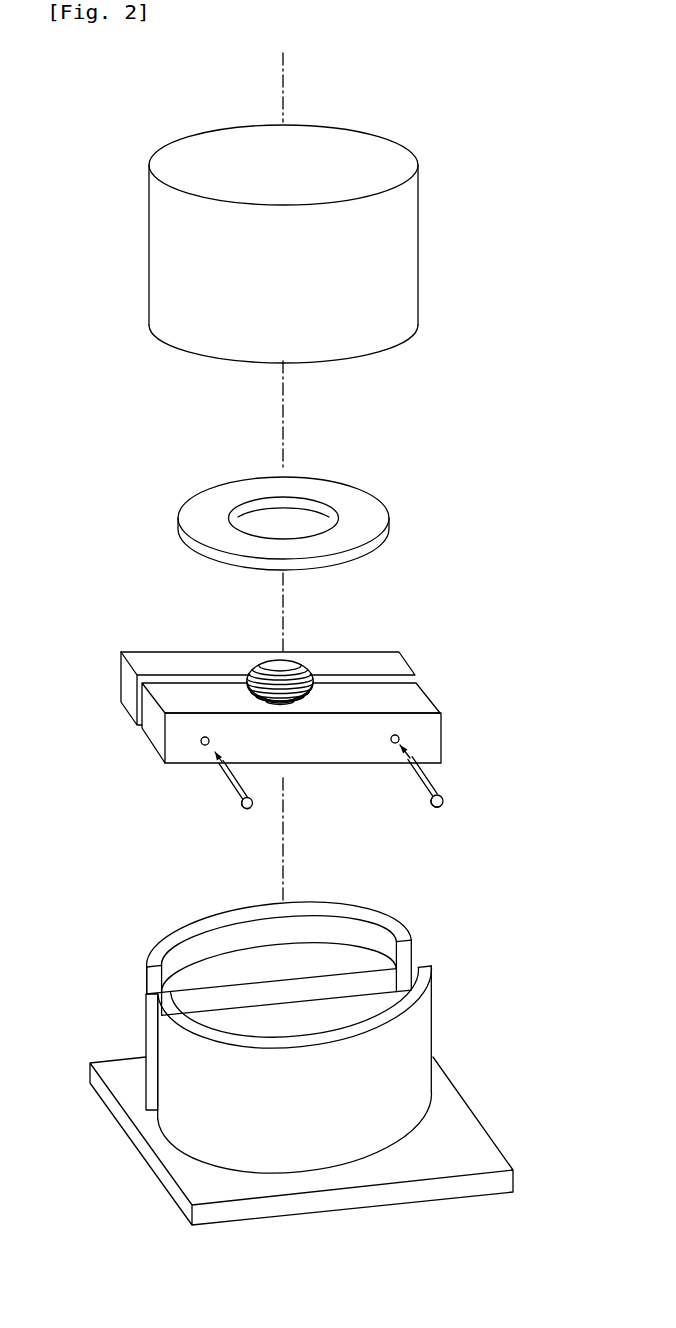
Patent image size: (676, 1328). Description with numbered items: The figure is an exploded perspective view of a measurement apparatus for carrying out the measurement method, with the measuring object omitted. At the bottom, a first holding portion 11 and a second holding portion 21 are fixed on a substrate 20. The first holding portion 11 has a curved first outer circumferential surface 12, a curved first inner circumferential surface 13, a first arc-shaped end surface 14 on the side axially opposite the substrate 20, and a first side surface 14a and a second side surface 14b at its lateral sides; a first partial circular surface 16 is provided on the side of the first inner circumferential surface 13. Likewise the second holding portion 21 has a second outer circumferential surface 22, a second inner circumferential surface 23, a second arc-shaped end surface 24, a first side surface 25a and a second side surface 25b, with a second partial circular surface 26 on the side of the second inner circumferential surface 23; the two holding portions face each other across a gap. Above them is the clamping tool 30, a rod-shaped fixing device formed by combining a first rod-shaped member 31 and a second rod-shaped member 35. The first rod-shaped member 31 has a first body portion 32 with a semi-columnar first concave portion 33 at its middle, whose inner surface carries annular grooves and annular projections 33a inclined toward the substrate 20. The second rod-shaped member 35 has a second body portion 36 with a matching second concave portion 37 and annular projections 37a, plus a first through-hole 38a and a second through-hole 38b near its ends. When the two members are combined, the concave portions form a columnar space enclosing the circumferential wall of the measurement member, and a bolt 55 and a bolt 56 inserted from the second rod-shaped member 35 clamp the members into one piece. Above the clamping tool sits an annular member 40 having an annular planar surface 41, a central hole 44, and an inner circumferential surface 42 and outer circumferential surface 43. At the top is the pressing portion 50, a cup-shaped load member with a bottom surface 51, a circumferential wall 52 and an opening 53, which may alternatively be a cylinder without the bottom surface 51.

The pressing portion 50 is at (290, 223).
The bottom surface 51 is at (183, 152).
The circumferential wall 52 is at (162, 257).
The opening 53 is at (367, 355).
The annular member 40 is at (292, 509).
The annular planar surface 41 is at (222, 493).
The inner circumferential surface 42 is at (248, 508).
The outer circumferential surface 43 is at (368, 557).
The central hole 44 is at (278, 517).
The clamping tool 30 is at (327, 721).
The first rod-shaped member 31 is at (299, 668).
The first body portion 32 is at (170, 665).
The first concave portion 33 is at (293, 654).
The annular projections 33a is at (293, 667).
The second rod-shaped member 35 is at (319, 739).
The second body portion 36 is at (353, 742).
The second concave portion 37 is at (280, 705).
The annular projections 37a is at (260, 700).
The first through-hole 38a is at (205, 745).
The second through-hole 38b is at (402, 739).
The bolt 55 is at (243, 806).
The bolt 56 is at (445, 800).
The first holding portion 11 is at (285, 935).
The first outer circumferential surface 12 is at (183, 932).
The first inner circumferential surface 13 is at (237, 942).
The first arc-shaped end surface 14 is at (353, 915).
The first side surface 14a is at (145, 973).
The second side surface 14b is at (405, 945).
The first partial circular surface 16 is at (323, 963).
The second holding portion 21 is at (269, 1101).
The second outer circumferential surface 22 is at (327, 1130).
The second inner circumferential surface 23 is at (240, 1027).
The second arc-shaped end surface 24 is at (262, 1040).
The first side surface 25a is at (145, 985).
The second side surface 25b is at (417, 962).
The second partial circular surface 26 is at (315, 1018).
The substrate 20 is at (470, 1147).